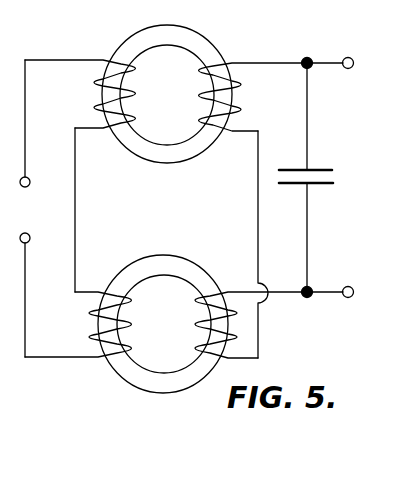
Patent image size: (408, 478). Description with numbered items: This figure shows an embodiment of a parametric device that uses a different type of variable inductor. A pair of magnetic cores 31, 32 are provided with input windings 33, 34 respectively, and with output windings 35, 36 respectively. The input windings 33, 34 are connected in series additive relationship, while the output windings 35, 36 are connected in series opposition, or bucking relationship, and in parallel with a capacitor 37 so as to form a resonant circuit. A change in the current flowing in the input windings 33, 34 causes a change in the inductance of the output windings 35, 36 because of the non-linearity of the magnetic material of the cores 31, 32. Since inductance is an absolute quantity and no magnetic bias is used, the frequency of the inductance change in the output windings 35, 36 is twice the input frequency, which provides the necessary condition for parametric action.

The magnetic core 31 is at (210, 43).
The magnetic core 32 is at (146, 391).
The input winding 33 is at (97, 82).
The input winding 34 is at (123, 321).
The output winding 35 is at (240, 109).
The output winding 36 is at (258, 333).
The capacitor 37 is at (315, 187).